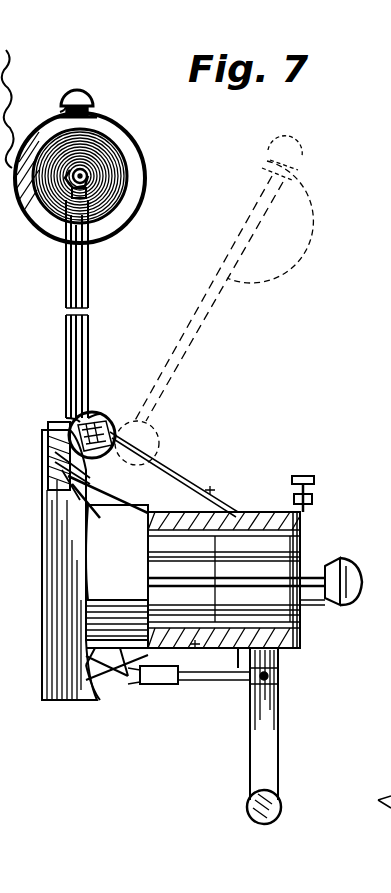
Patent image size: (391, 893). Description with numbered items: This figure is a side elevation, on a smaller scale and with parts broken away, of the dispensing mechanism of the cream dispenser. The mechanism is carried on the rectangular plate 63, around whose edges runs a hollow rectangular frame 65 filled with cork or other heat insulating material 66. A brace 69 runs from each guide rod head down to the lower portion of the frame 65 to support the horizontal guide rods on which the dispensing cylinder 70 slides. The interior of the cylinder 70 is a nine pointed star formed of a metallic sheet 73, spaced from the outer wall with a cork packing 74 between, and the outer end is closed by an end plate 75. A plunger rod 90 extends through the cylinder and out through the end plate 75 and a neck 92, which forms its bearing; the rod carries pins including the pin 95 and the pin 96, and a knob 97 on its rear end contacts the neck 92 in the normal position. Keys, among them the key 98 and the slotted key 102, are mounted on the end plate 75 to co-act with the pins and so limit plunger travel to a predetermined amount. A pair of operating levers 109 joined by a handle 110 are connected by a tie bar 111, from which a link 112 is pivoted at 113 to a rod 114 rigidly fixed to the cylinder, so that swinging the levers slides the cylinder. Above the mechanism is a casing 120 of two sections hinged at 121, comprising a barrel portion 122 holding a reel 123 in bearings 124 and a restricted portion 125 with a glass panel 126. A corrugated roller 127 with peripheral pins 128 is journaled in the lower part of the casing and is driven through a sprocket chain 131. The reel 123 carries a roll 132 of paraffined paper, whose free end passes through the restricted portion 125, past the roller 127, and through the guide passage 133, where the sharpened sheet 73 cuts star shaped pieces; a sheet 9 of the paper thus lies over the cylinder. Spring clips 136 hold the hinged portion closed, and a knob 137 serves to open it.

The thread 9 is at (201, 562).
The rectangular plate 63 is at (52, 596).
The hollow rectangular frame 65 is at (60, 422).
The heat insulating material 66 is at (50, 440).
The brace 69 is at (104, 664).
The dispensing cylinder 70 is at (176, 503).
The metallic sheet 73 is at (232, 520).
The packing 74 is at (238, 682).
The end plate 75 is at (302, 614).
The rod 90 is at (150, 588).
The neck 92 is at (322, 574).
The pin 95 is at (236, 592).
The pin 96 is at (150, 572).
The knob 97 is at (366, 578).
The key 98 is at (313, 500).
The key 102 is at (314, 480).
The operating lever 109 is at (279, 720).
The handle 110 is at (281, 806).
The tie bar 111 is at (280, 678).
The link 112 is at (212, 682).
The pivot 113 is at (152, 686).
The rod 114 is at (68, 698).
The casing 120 is at (38, 228).
The hinge 121 is at (92, 498).
The barrel portion 122 is at (110, 122).
The reel 123 is at (90, 168).
The bearings 124 is at (92, 190).
The restricted portion 125 is at (89, 290).
The glass panel 126 is at (67, 330).
The corrugated roller 127 is at (105, 410).
The pins 128 is at (152, 418).
The sprocket chain 131 is at (160, 462).
The roll of paraffined paper 132 is at (95, 176).
The guide passage 133 is at (60, 460).
The spring clips 136 is at (63, 108).
The knob 137 is at (90, 90).